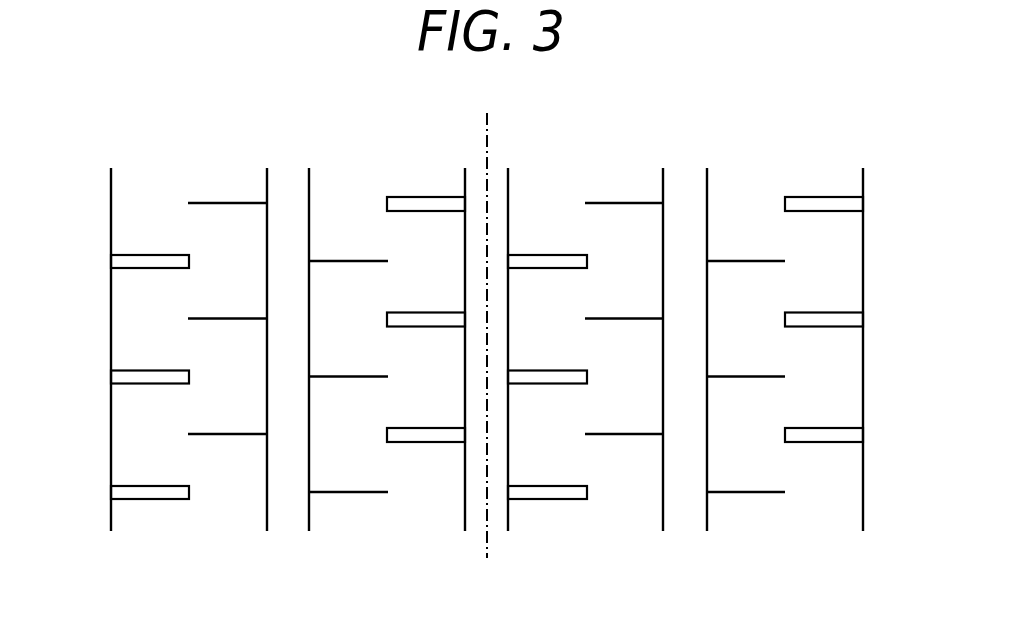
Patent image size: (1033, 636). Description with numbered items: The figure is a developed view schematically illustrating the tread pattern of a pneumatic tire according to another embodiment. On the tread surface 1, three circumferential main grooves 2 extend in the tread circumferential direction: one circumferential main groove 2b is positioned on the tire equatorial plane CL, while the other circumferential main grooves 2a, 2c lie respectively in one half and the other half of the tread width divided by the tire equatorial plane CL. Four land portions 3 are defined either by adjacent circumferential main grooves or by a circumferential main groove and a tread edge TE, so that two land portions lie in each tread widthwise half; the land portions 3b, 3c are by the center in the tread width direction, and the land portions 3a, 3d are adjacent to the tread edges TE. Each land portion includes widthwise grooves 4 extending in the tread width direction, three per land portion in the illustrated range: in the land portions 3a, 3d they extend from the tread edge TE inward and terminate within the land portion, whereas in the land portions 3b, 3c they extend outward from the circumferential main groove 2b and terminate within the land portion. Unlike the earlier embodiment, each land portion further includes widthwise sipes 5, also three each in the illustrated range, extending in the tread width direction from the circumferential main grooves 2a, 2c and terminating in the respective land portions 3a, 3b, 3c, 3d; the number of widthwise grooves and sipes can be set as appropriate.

The tread surface 1 is at (761, 105).
The circumferential main grooves 2 is at (499, 351).
The circumferential main groove 2a is at (288, 510).
The circumferential main groove 2b is at (495, 178).
The circumferential main groove 2c is at (687, 510).
The land portions 3 is at (487, 374).
The land portion 3a is at (203, 510).
The land portion 3b is at (377, 510).
The land portion 3c is at (598, 510).
The land portion 3d is at (775, 510).
The widthwise grooves 4 is at (142, 262).
The widthwise sipes 5 is at (224, 204).
The tire equatorial plane CL is at (487, 319).
The tread edge TE is at (111, 328).